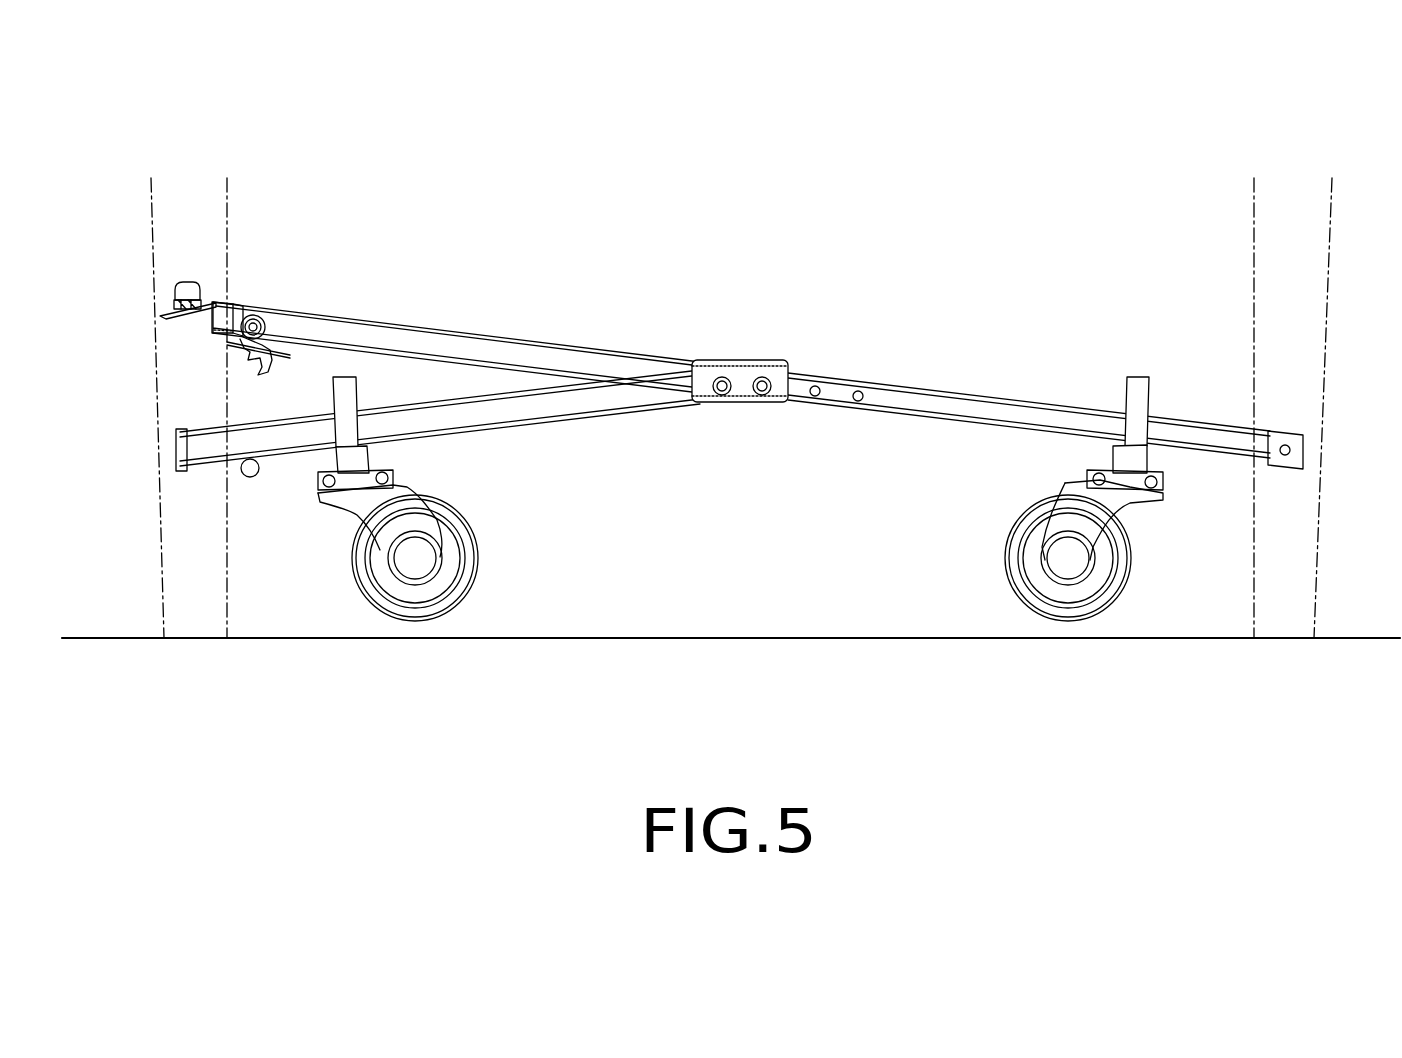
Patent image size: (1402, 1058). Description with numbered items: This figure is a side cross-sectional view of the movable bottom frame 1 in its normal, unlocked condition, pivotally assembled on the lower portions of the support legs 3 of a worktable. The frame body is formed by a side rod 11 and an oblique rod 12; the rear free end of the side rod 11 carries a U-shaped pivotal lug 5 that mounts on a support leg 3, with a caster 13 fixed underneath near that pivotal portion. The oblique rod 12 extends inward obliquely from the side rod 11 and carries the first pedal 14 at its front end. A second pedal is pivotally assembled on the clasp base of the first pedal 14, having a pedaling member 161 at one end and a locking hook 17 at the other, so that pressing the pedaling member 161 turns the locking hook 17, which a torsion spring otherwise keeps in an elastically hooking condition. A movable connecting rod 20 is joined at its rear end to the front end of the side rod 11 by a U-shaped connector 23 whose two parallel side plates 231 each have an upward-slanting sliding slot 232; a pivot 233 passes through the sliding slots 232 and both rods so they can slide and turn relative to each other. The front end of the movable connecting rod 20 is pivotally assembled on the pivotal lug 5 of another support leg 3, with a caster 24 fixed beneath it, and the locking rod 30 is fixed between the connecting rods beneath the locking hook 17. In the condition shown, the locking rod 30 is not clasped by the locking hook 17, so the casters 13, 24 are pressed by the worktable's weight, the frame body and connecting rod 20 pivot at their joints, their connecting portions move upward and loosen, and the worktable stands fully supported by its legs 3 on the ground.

The movable bottom frame 1 is at (842, 270).
The support leg 3 is at (152, 412).
The U-shaped pivotal lug 5 is at (176, 465).
The side rod 11 is at (976, 392).
The oblique rod 12 is at (460, 331).
The caster 13 is at (1126, 588).
The first pedal 14 is at (258, 308).
The pedaling member 161 is at (188, 282).
The locking hook 17 is at (240, 372).
The movable connecting rod 20 is at (540, 424).
The U-shaped connector 23 is at (740, 386).
The side plate 231 is at (712, 378).
The sliding slot 232 is at (723, 402).
The pivot 233 is at (764, 402).
The caster 24 is at (478, 580).
The locking rod 30 is at (250, 480).